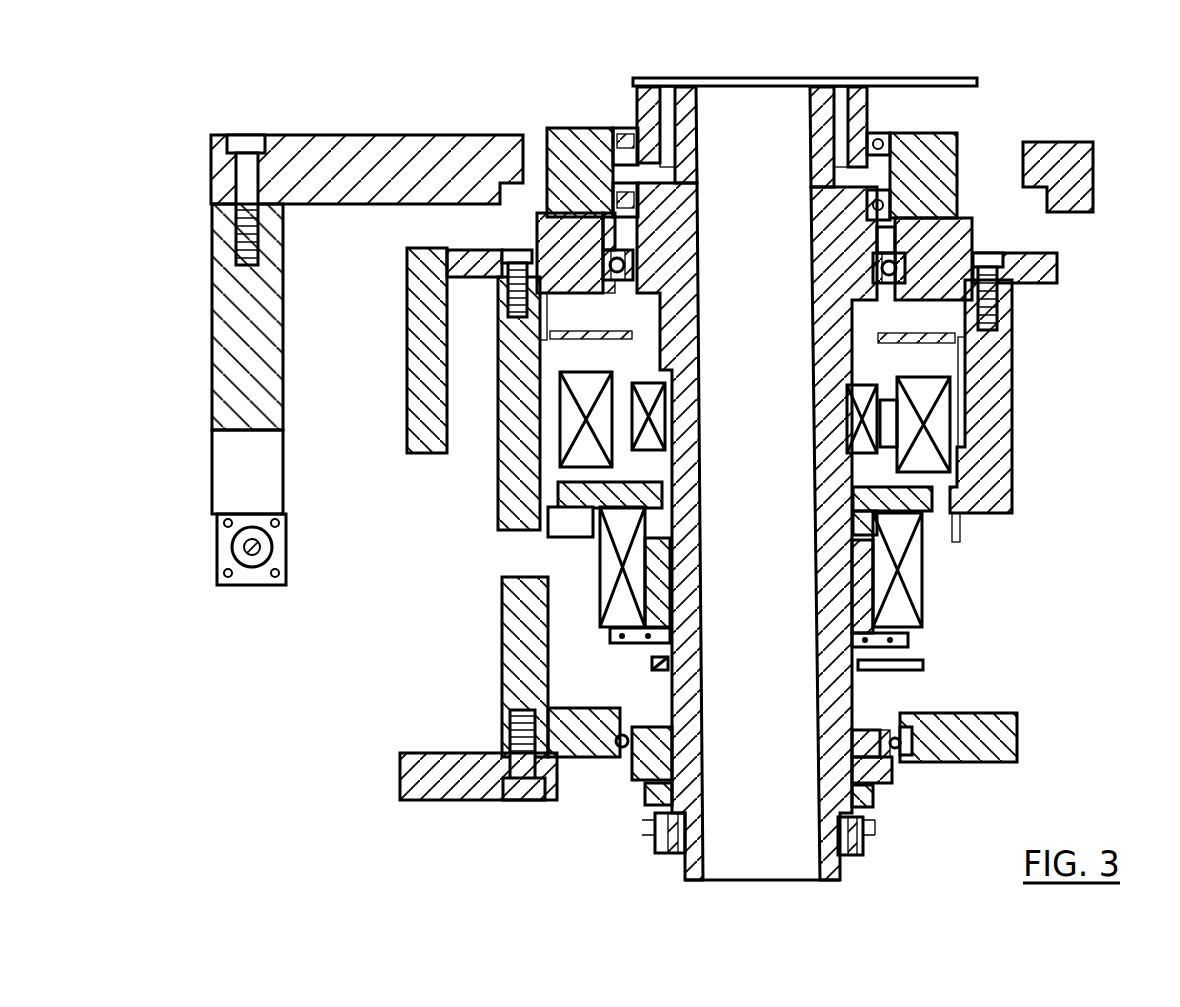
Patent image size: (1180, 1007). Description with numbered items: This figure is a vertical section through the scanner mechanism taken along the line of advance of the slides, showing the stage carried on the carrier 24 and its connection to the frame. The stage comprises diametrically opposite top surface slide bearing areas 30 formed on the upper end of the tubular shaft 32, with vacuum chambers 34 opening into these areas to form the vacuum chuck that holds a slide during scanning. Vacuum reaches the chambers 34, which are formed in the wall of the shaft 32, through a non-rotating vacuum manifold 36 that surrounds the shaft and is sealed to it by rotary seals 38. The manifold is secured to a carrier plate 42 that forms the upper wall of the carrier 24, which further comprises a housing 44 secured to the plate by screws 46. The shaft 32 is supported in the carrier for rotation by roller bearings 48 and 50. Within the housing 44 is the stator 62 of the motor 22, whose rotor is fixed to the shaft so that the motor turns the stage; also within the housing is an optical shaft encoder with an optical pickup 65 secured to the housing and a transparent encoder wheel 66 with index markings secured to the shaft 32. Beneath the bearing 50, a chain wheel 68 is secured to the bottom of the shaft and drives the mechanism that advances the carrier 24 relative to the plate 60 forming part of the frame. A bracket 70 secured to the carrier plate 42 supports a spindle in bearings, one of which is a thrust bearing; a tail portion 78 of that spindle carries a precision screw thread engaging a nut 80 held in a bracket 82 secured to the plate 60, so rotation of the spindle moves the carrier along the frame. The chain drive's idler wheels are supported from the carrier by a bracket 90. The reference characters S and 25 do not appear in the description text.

The spindle S is at (773, 80).
The motor 22 is at (932, 358).
The carrier 24 is at (1072, 546).
The support ring 25 is at (982, 694).
The slide bearing areas 30 is at (683, 85).
The tubular shaft 32 is at (683, 128).
The vacuum chambers 34 is at (668, 105).
The vacuum manifold 36 is at (925, 133).
The rotary seals 38 is at (870, 138).
The carrier plate 42 is at (958, 245).
The housing 44 is at (1012, 407).
The screws 46 is at (990, 258).
The roller bearing 48 is at (893, 283).
The roller bearing 50 is at (898, 752).
The plate 60 is at (352, 135).
The stator 62 is at (943, 425).
The optical pickup 65 is at (925, 665).
The encoder wheel 66 is at (910, 640).
The chain wheel 68 is at (867, 826).
The bracket 70 is at (405, 333).
The tail portion 78 is at (244, 547).
The nut 80 is at (268, 548).
The bracket 82 is at (210, 333).
The bracket 90 is at (458, 800).